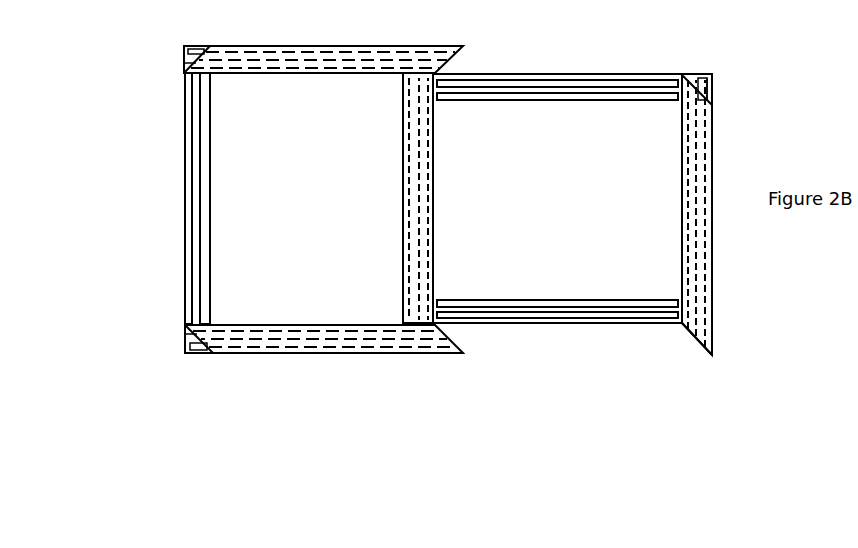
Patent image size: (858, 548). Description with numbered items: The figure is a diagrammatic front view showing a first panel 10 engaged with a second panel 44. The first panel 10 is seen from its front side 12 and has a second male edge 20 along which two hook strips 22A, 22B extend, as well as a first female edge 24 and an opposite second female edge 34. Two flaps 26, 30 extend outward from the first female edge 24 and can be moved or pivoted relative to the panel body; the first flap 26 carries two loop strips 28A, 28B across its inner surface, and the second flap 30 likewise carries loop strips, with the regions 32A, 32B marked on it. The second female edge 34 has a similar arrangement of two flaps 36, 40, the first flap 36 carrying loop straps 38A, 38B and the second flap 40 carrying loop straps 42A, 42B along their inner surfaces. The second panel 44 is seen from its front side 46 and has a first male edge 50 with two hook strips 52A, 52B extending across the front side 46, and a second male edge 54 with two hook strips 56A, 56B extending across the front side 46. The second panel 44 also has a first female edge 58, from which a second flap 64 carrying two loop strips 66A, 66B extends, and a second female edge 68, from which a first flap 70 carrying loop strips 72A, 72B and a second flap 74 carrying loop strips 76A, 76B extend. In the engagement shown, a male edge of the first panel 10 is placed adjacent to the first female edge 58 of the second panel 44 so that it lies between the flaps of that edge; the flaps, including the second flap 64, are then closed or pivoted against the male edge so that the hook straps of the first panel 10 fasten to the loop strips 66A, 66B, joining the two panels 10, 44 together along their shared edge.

The panel 10 is at (270, 392).
The front side 12 is at (313, 208).
The second male edge 20 is at (183, 163).
The hook strip 22A is at (190, 245).
The hook strip 22B is at (206, 215).
The first female edge 24 is at (223, 75).
The first flap 26 is at (193, 47).
The loop strip 28A is at (187, 46).
The loop strip 28B is at (183, 62).
The second flap 30 is at (233, 45).
The upper layer of top member 32A is at (352, 46).
The lower layer of top member 32B is at (330, 67).
The second female edge 34 is at (293, 323).
The first flap 36 is at (212, 353).
The loop strap 38A is at (192, 353).
The loop strap 38B is at (184, 344).
The second flap 40 is at (385, 353).
The loop strap 42A is at (337, 347).
The loop strap 42B is at (317, 333).
The second panel 44 is at (715, 390).
The front side 46 is at (563, 210).
The first male edge 50 is at (512, 74).
The hook strip 52A is at (545, 83).
The hook strip 52B is at (567, 97).
The second male edge 54 is at (617, 325).
The hook strip 56A is at (562, 315).
The hook strip 56B is at (530, 303).
The first female edge 58 is at (433, 132).
The second flap 64 is at (402, 148).
The loop strip 66A is at (412, 212).
The loop strip 66B is at (425, 227).
The second female edge 68 is at (682, 227).
The first flap 70 is at (703, 75).
The loop strip 72A is at (703, 87).
The loop strip 72B is at (697, 77).
The second flap 74 is at (697, 338).
The loop strip 76A is at (705, 248).
The loop strip 76B is at (690, 173).